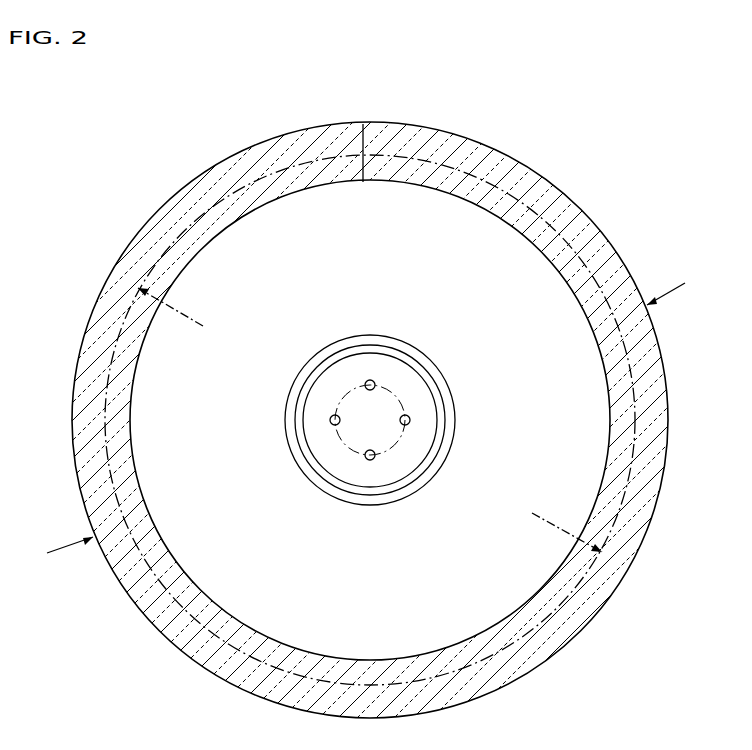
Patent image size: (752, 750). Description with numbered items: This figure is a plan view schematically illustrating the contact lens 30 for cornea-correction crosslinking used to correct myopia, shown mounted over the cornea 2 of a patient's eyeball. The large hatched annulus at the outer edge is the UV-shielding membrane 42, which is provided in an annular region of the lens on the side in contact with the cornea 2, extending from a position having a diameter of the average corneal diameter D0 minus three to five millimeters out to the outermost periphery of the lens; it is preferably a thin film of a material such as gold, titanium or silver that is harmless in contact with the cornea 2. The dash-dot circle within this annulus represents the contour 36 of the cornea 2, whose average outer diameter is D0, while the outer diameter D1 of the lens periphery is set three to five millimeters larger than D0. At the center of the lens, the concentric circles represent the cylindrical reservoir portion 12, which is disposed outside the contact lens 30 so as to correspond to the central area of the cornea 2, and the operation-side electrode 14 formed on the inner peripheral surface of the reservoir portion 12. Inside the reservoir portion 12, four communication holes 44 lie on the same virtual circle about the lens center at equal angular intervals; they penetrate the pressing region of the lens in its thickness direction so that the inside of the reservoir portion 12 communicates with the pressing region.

The cornea 2 is at (540, 292).
The reservoir portion 12 is at (398, 340).
The operation-side electrode 14 is at (398, 368).
The contact lens 30 is at (507, 152).
The contour 36 is at (578, 207).
The UV-shielding membrane 42 is at (363, 153).
The communication holes 44 is at (411, 420).
The average outer diameter of the outer peripheral edge of the human cornea D0 is at (370, 420).
The outer diameter of the peripheral portion D1 is at (376, 411).